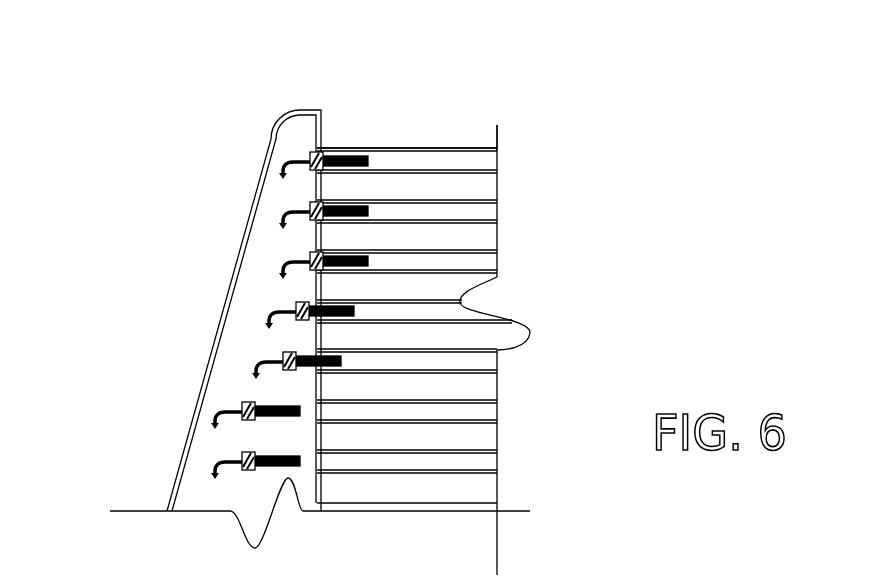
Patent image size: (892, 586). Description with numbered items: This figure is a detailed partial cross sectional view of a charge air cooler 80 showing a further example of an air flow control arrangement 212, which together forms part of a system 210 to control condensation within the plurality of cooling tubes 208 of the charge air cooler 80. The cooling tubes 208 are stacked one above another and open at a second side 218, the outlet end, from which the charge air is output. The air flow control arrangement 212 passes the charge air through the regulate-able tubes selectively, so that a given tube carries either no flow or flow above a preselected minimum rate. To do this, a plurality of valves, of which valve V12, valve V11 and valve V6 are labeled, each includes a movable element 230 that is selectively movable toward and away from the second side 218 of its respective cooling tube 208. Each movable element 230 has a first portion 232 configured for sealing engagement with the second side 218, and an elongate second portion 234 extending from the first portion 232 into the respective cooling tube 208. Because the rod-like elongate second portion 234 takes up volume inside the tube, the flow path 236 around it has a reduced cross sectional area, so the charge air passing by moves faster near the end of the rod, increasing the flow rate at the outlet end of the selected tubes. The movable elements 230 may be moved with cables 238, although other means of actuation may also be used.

The charge air cooler 80 is at (748, 97).
The cooling tubes 208 is at (430, 148).
The system 210 is at (583, 117).
The air flow control arrangement 212 is at (131, 98).
The second side 218 is at (317, 460).
The movable element 230 is at (243, 406).
The first portion 232 is at (310, 257).
The elongate second portion 234 is at (345, 156).
The flow path 236 is at (343, 304).
The cables 238 is at (243, 465).
The valve V6 is at (243, 471).
The valve V11 is at (310, 208).
The valve V12 is at (310, 152).